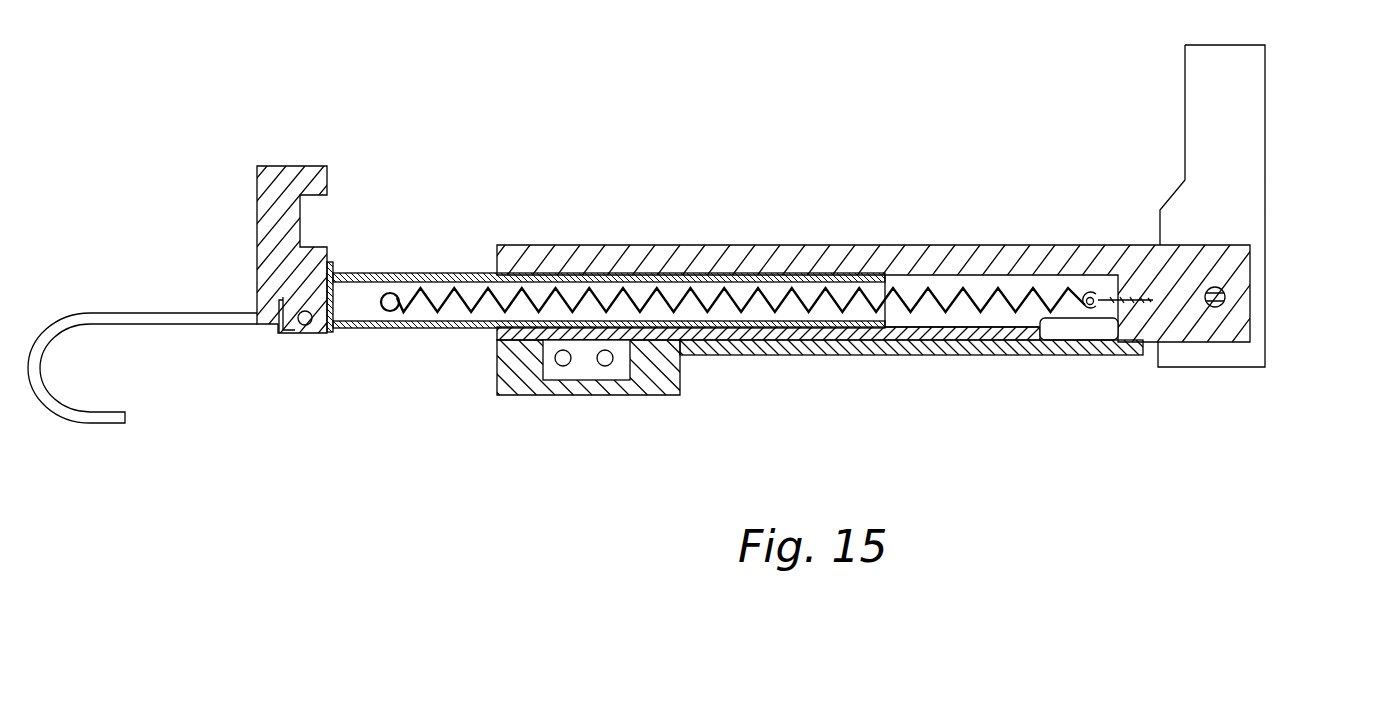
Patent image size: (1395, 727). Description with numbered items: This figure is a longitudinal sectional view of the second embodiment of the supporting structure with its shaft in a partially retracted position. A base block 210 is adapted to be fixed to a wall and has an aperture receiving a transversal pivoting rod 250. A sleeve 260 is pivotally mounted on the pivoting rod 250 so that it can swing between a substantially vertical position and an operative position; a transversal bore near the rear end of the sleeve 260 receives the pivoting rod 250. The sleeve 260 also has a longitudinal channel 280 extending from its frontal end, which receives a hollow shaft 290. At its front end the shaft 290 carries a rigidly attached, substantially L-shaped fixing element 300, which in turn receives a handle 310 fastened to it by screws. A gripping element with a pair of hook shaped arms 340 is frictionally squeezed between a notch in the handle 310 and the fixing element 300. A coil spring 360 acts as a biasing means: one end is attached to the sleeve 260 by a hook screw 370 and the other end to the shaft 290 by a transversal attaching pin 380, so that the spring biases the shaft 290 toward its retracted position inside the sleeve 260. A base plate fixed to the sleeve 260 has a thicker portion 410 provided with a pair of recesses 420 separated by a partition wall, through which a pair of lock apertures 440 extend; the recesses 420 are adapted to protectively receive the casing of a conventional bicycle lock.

The base block 210 is at (1240, 112).
The pivoting rod 250 is at (1217, 307).
The sleeve 260 is at (842, 258).
The longitudinal channel 280 is at (940, 317).
The hollow shaft 290 is at (432, 272).
The fixing element 300 is at (320, 332).
The handle 310 is at (283, 187).
The hook shaped arm 340 is at (42, 370).
The coil spring 360 is at (993, 305).
The hook screw 370 is at (1143, 300).
The transversal attaching pin 380 is at (397, 308).
The thicker portion 410 is at (510, 370).
The recess 420 is at (682, 377).
The lock aperture 440 is at (570, 365).